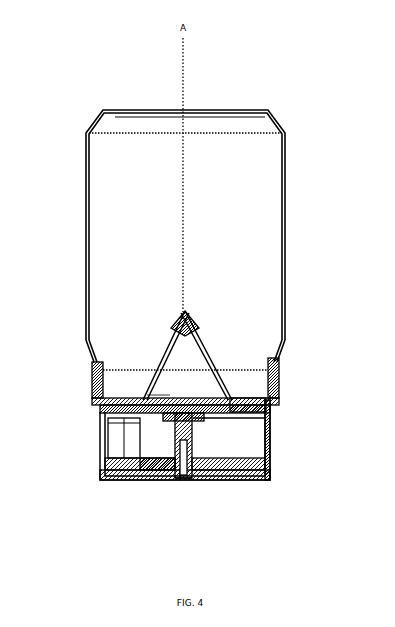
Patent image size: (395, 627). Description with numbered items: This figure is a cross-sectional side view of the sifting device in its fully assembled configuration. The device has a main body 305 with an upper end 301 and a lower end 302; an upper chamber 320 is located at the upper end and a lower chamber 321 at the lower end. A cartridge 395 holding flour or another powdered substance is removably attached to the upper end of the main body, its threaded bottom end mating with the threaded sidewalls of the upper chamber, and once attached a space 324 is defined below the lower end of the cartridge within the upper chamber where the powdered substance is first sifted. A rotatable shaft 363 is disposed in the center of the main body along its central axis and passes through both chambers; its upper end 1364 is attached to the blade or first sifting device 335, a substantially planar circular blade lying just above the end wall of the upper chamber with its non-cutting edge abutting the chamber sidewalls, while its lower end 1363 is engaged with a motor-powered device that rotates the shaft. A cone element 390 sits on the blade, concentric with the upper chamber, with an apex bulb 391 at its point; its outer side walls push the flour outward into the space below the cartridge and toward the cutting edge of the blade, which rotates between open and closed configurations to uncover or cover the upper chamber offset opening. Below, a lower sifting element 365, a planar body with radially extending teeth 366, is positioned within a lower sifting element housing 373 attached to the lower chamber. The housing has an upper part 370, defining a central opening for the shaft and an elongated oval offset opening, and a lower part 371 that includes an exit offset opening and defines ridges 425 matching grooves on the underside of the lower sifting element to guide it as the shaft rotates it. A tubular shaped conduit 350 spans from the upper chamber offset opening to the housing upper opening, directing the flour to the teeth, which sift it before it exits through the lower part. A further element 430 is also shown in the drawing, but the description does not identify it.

The cartridge 395 is at (86, 193).
The blade or first sifting device 335 is at (284, 345).
The upper chamber 320 is at (90, 360).
The upper end 301 is at (288, 358).
The main body 305 is at (90, 424).
The rotatable shaft 363 is at (118, 382).
The space 324 is at (266, 400).
The lower chamber 321 is at (270, 420).
The cone element 390 is at (213, 352).
The apex bulb 391 is at (190, 318).
The upper end of the rotatable shaft 1364 is at (178, 398).
The upper part of the lower sifting element housing 370 is at (270, 441).
The tubular shaped conduit 350 is at (100, 446).
The ring 430 is at (100, 464).
The lower sifting element 365 is at (152, 478).
The lower part of the lower sifting element housing 371 is at (253, 478).
The teeth 366 is at (102, 478).
The lower sifting element housing 373 is at (276, 482).
The lower end 302 is at (277, 463).
The lower end of the rotatable shaft 1363 is at (186, 486).
The ridges 425 is at (175, 486).